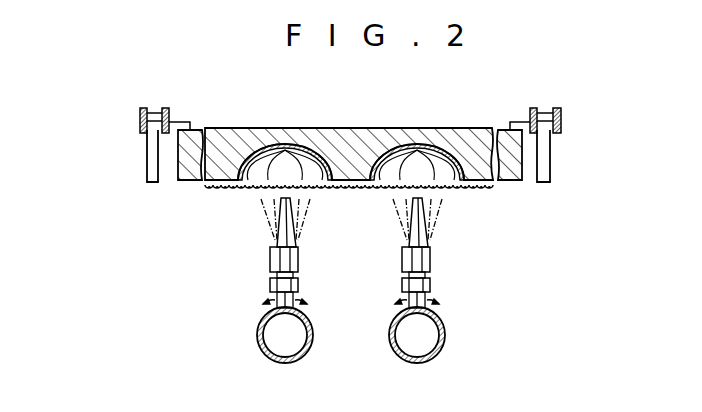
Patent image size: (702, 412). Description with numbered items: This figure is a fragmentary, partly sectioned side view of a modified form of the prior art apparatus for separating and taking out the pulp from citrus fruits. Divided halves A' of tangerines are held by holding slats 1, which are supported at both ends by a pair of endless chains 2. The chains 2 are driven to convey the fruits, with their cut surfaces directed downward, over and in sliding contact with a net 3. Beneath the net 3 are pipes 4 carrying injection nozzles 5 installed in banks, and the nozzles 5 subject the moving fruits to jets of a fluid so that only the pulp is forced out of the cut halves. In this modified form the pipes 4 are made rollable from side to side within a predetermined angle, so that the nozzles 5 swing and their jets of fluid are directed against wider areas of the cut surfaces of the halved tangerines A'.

The holding slat 1 is at (358, 140).
The endless chain 2 is at (140, 124).
The net 3 is at (470, 189).
The pipe 4 is at (258, 332).
The injection nozzle 5 is at (277, 265).
The divided half of tangerine A' is at (351, 122).